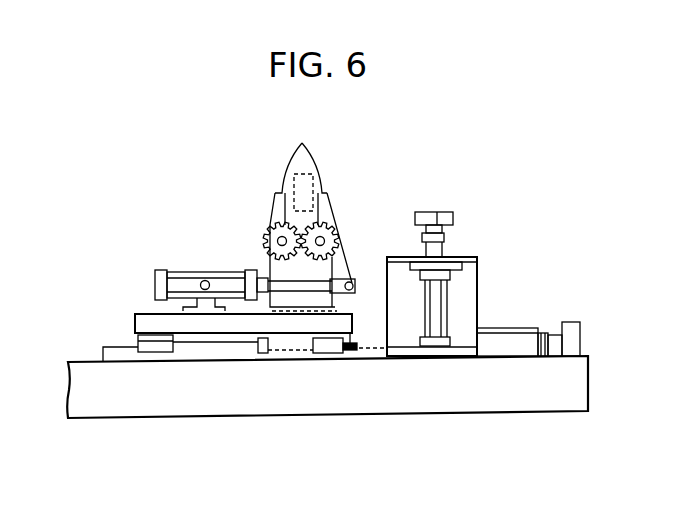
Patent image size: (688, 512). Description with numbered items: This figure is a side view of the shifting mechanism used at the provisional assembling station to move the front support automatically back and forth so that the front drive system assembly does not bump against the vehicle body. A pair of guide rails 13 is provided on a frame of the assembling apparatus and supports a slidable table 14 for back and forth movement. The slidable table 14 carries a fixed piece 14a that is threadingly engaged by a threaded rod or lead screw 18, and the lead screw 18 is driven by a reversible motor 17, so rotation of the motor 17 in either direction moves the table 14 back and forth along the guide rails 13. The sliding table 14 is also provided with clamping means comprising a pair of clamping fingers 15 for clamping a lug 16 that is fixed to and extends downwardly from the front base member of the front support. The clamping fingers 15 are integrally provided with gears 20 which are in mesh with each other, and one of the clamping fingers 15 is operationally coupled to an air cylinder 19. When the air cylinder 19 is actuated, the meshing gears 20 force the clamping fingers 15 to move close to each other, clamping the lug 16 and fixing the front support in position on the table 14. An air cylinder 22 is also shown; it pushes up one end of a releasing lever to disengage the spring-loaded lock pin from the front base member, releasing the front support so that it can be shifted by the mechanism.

The guide rails 13 is at (213, 353).
The slidable table 14 is at (138, 313).
The fixed piece 14a is at (333, 348).
The clamping fingers 15 is at (302, 145).
The lug 16 is at (329, 207).
The reversible motor 17 is at (510, 327).
The lead screw 18 is at (364, 347).
The air cylinder 19 is at (185, 271).
The gears 20 is at (264, 230).
The air cylinder 22 is at (452, 217).